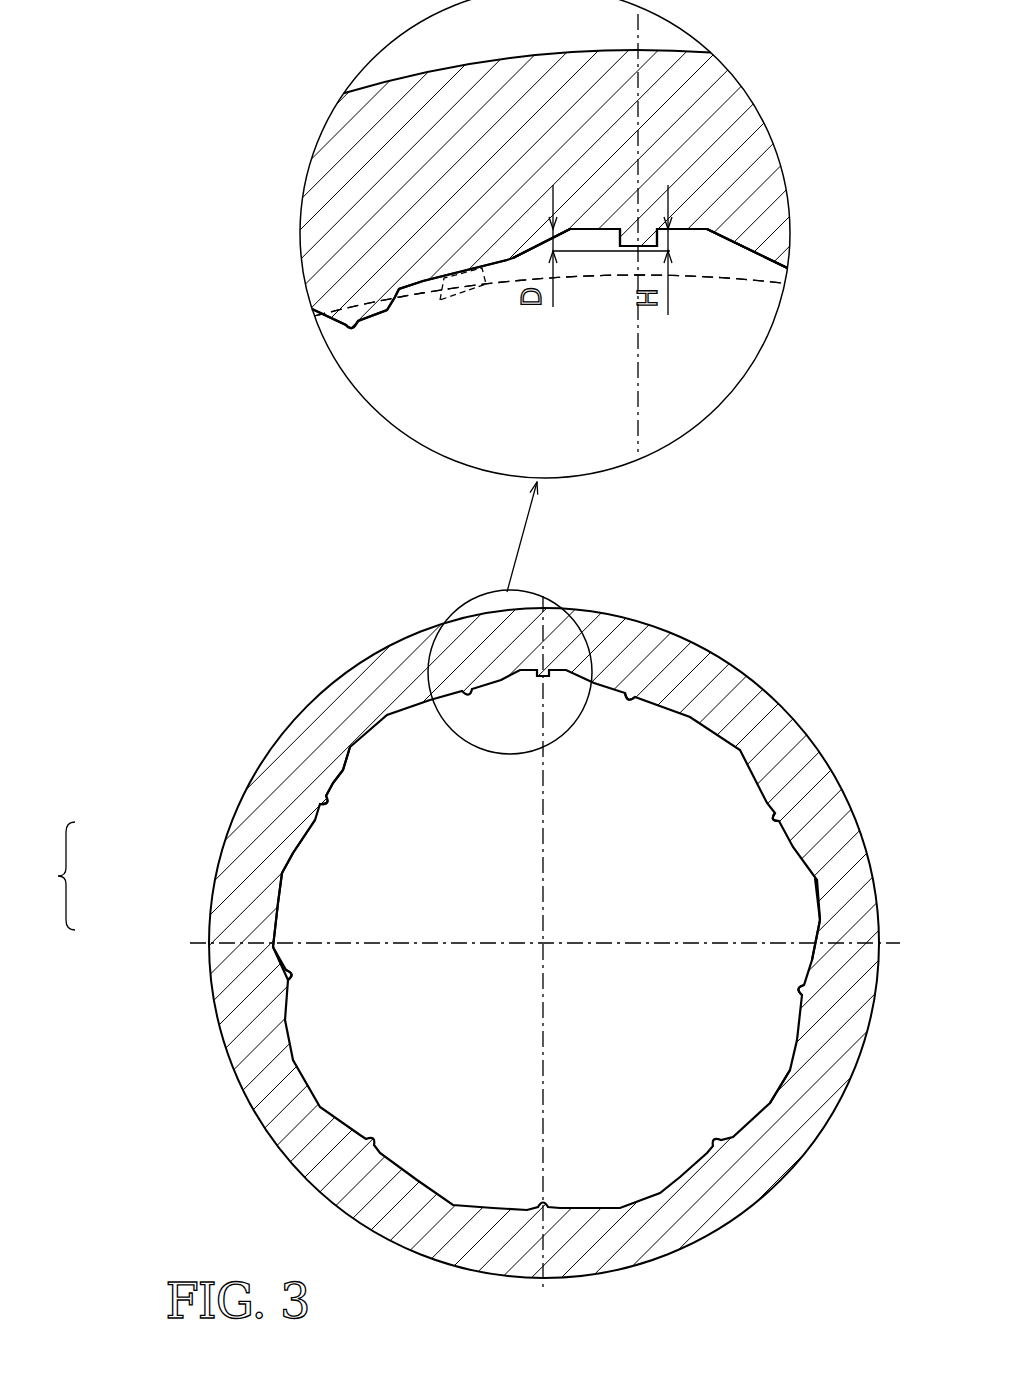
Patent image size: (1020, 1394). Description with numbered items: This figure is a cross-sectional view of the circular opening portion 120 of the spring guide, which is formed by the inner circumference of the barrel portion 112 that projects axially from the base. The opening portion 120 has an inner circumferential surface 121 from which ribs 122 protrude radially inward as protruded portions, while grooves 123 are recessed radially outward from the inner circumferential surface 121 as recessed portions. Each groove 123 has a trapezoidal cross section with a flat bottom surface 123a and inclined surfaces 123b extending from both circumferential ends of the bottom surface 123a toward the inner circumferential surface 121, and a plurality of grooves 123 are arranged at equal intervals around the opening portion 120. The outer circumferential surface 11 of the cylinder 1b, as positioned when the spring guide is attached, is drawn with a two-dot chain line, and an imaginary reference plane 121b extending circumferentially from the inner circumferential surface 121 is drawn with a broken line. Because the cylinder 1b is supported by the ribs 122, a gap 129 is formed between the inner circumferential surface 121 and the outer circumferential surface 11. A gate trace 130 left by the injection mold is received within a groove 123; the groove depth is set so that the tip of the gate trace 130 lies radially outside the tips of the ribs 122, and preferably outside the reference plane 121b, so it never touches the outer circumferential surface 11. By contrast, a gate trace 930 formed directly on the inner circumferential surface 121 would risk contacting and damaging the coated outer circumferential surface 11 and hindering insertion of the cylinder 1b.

The opening portion 120 is at (544, 664).
The barrel portion 112 is at (728, 626).
The inner circumferential surface 121 is at (318, 812).
The imaginary reference plane 121b is at (752, 262).
The rib 122 is at (320, 800).
The groove 123 is at (682, 239).
The bottom surface 123a is at (280, 880).
The inclined surface 123b is at (305, 850).
The gap 129 is at (330, 314).
The gate trace 130 is at (610, 227).
The gate trace 930 is at (445, 302).
The outer circumferential surface 11 is at (787, 271).
The cylinder 1b is at (550, 295).